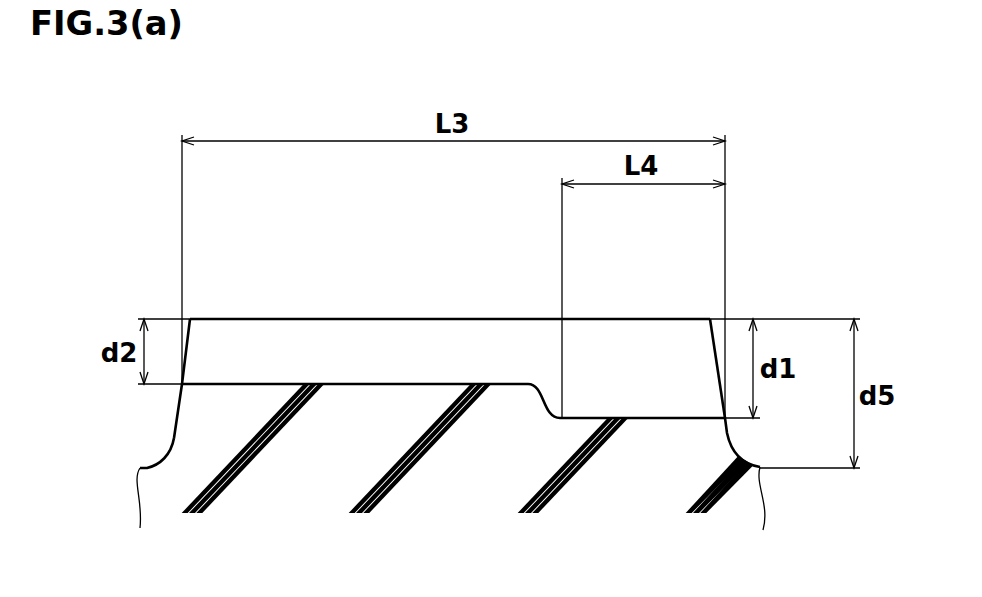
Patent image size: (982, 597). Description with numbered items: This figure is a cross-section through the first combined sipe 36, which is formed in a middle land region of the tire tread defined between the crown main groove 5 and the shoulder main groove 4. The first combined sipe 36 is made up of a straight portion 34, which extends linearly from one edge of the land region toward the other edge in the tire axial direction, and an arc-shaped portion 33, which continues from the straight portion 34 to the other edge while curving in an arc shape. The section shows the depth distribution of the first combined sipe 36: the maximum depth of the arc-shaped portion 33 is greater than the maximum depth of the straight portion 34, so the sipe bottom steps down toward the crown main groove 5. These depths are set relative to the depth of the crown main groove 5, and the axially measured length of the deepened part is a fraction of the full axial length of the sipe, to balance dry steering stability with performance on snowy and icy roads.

The shoulder main groove 4 is at (158, 452).
The crown main groove 5 is at (745, 452).
The arc-shaped portion 33 is at (620, 392).
The straight portion 34 is at (364, 356).
The first combined sipe 36 is at (470, 356).